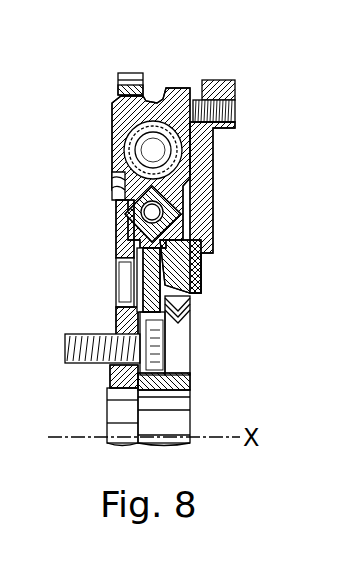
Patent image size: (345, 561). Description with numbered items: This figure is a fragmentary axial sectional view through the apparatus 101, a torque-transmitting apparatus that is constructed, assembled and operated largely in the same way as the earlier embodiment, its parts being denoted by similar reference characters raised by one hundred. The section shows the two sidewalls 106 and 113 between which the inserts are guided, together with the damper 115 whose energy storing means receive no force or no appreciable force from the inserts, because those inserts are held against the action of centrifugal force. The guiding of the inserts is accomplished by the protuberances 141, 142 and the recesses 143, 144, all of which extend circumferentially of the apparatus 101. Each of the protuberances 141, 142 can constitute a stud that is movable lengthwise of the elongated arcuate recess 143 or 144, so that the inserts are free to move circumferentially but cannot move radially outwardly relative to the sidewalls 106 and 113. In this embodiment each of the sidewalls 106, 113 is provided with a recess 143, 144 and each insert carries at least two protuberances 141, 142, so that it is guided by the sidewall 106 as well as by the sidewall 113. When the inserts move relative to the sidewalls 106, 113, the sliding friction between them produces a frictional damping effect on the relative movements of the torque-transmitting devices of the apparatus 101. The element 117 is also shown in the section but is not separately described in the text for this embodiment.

The apparatus 101 is at (88, 68).
The damper 115 is at (199, 70).
The sidewall 106 is at (112, 172).
The sidewall 113 is at (172, 157).
The recess 144 is at (166, 212).
The protuberance 142 is at (183, 221).
The recess 143 is at (118, 208).
The protuberance 141 is at (118, 226).
The sleeve 117 is at (170, 296).